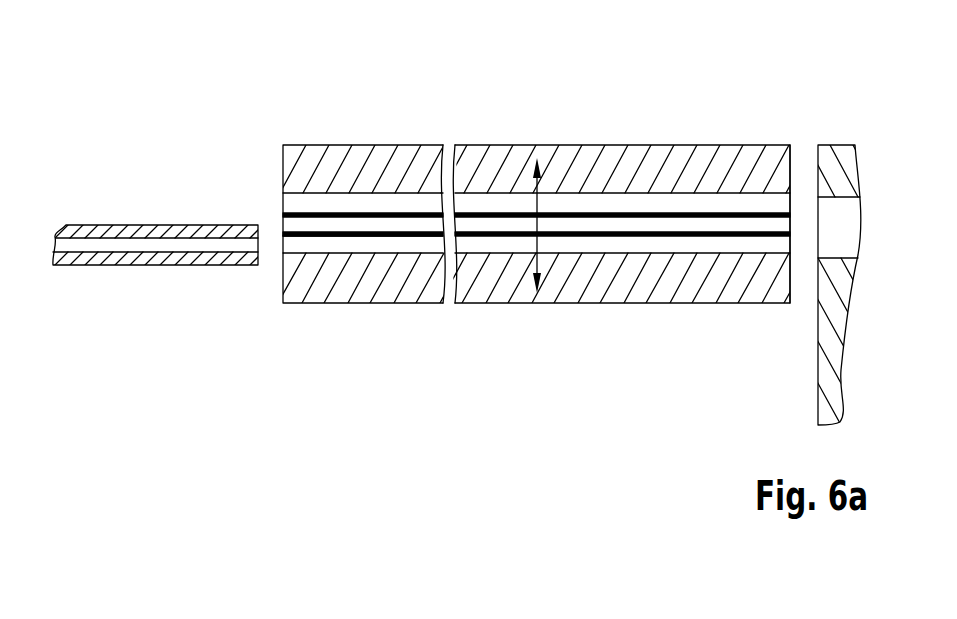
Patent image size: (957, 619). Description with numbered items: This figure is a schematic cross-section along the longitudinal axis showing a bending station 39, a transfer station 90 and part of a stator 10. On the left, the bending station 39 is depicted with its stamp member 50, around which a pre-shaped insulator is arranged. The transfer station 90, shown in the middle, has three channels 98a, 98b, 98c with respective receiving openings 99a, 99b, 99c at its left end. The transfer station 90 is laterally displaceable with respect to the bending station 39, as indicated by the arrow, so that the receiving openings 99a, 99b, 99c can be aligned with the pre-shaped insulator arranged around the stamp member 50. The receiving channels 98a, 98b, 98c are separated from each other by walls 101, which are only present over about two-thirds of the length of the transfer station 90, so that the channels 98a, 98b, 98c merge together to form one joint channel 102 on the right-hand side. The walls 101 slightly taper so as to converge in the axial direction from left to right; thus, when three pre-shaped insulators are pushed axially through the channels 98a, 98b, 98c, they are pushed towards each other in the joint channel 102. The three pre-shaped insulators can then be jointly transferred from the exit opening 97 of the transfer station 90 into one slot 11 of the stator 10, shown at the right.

The stator 10 is at (829, 383).
The slot 11 is at (838, 207).
The bending station 39 is at (108, 203).
The stamp member 50 is at (160, 246).
The transfer station 90 is at (569, 92).
The exit opening 97 is at (791, 205).
The channel 98a is at (492, 203).
The channel 98b is at (356, 225).
The channel 98c is at (492, 245).
The receiving opening 99a is at (285, 200).
The receiving opening 99b is at (287, 223).
The receiving opening 99c is at (283, 243).
The walls 101 is at (576, 234).
The joint channel 102 is at (740, 226).